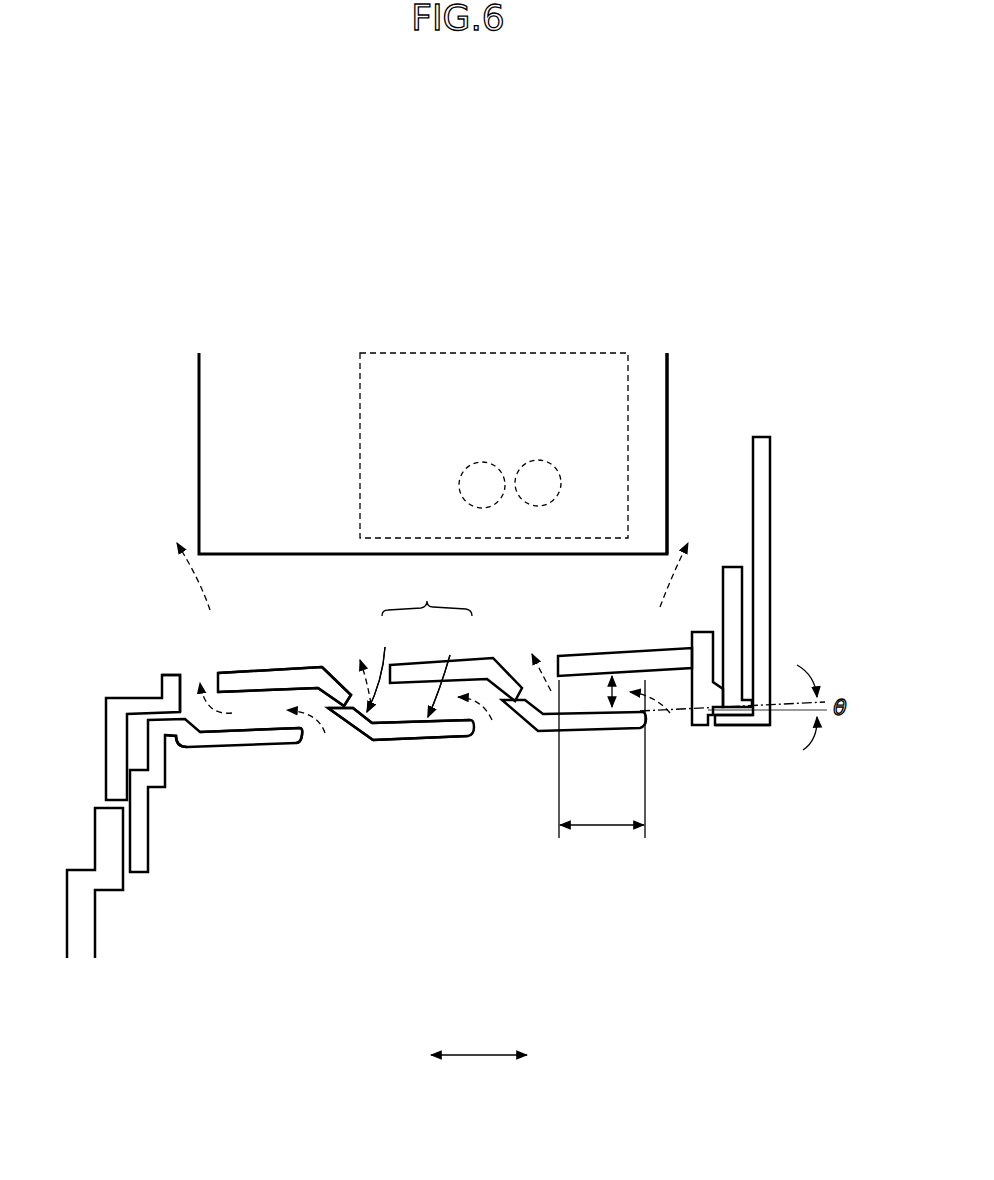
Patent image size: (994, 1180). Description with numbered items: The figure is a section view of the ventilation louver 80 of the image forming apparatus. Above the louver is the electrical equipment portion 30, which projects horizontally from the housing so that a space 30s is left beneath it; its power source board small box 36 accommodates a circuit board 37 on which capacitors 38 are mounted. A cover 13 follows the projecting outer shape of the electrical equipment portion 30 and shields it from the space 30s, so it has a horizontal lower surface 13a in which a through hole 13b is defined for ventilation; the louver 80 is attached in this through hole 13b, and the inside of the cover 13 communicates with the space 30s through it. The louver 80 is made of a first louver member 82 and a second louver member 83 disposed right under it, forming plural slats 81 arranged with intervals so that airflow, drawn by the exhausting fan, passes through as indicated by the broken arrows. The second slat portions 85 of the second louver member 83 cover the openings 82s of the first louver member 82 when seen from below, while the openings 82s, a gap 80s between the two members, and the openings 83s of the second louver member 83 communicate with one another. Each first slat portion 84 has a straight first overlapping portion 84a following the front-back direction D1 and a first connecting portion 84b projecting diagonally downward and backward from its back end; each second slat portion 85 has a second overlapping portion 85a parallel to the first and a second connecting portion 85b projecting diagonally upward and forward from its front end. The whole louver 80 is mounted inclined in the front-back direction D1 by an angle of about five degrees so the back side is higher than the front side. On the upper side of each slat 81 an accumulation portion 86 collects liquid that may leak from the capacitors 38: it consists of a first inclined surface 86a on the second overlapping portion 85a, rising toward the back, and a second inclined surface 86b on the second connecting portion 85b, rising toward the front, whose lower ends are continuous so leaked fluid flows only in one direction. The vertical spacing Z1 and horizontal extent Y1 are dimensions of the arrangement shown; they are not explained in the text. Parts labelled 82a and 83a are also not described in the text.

The cover 13 is at (767, 558).
The horizontal lower surface 13a is at (740, 729).
The through hole 13b is at (708, 712).
The electrical equipment portion 30 is at (285, 318).
The space 30s is at (545, 892).
The power source board small box 36 is at (668, 422).
The circuit board 37 is at (558, 358).
The capacitors 38 is at (493, 467).
The louver 80 is at (312, 859).
The gap 80s is at (255, 715).
The slats 81 is at (333, 746).
The first louver member 82 is at (133, 702).
The arm of cover member 82a is at (598, 658).
The openings of the first louver member 82s is at (210, 680).
The second louver member 83 is at (143, 822).
The projection of holding plate 83a is at (213, 742).
The openings of the second louver member 83s is at (310, 743).
The first slat portions 84 is at (345, 604).
The first overlapping portion 84a is at (267, 677).
The first connecting portion 84b is at (337, 683).
The second slat portions 85 is at (343, 810).
The second overlapping portion 85a is at (417, 735).
The second connecting portion 85b is at (353, 724).
The accumulation portion 86 is at (419, 647).
The first inclined surface 86a is at (450, 673).
The second inclined surface 86b is at (389, 666).
The vertical gap Z1 is at (593, 691).
The horizontal distance Y1 is at (602, 759).
The front-back direction D1 is at (481, 1046).